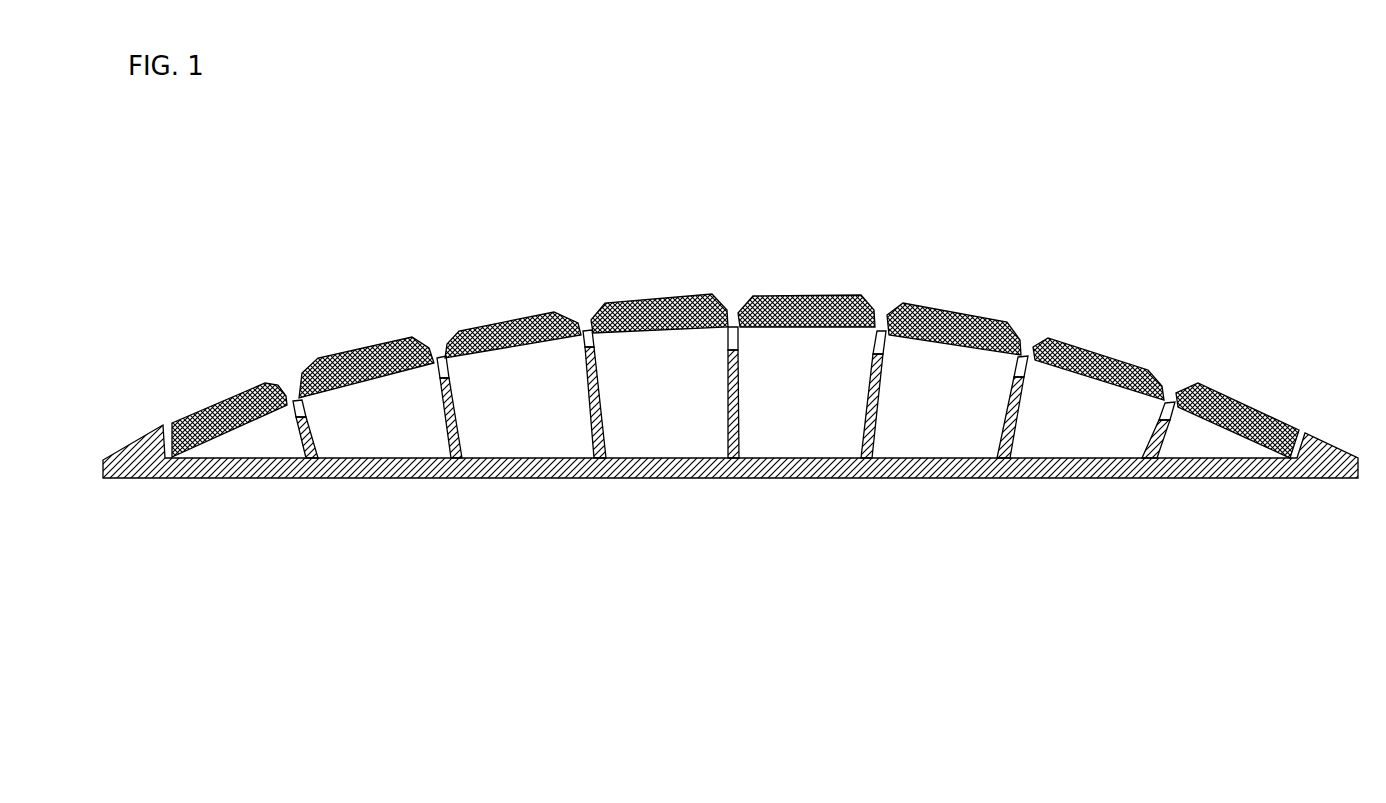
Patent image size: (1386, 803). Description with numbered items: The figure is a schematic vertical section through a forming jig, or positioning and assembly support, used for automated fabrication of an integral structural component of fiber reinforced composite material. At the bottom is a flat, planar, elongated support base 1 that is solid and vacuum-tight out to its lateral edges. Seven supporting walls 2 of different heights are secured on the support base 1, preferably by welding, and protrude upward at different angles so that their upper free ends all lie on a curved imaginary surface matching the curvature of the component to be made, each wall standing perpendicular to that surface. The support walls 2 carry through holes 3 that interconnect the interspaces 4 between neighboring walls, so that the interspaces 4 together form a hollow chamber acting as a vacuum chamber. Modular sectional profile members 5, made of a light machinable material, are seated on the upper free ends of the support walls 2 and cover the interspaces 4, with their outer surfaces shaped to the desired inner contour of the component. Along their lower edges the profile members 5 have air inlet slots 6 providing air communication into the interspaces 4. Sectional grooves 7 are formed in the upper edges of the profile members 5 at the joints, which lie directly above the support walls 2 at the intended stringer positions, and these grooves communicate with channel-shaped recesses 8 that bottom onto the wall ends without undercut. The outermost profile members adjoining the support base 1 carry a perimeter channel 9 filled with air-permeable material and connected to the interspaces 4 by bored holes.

The support base 1 is at (732, 467).
The supporting walls 2 is at (588, 410).
The through holes 3 is at (592, 358).
The interspaces 4 is at (507, 408).
The modular sectional profile members 5 is at (826, 296).
The air inlet slots 6 is at (1050, 335).
The sectional grooves 7 is at (877, 309).
The channel-shaped recesses 8 is at (1180, 387).
The perimeter channel 9 is at (168, 423).